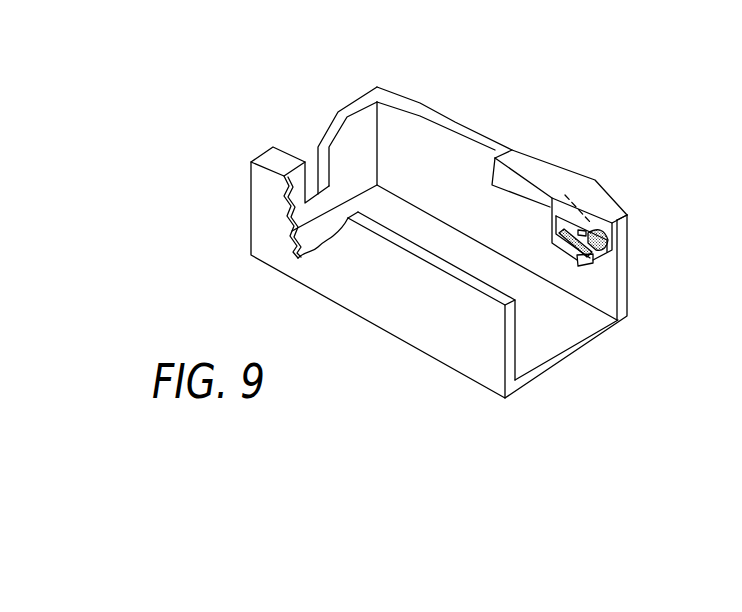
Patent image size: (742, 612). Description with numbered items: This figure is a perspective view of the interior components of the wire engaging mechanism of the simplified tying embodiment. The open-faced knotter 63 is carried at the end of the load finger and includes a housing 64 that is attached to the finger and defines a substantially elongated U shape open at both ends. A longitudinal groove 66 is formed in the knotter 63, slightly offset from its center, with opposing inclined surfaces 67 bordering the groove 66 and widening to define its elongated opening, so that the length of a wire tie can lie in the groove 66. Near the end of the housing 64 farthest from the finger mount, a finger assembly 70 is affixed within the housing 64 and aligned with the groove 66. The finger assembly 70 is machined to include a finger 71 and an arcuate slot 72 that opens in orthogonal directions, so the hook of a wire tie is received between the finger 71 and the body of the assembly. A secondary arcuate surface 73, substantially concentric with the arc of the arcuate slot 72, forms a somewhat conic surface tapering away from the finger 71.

The knotter 63 is at (634, 311).
The housing 64 is at (580, 326).
The longitudinal groove 66 is at (312, 182).
The inclined surfaces 67 is at (338, 120).
The finger assembly 70 is at (541, 178).
The finger 71 is at (582, 266).
The arcuate slot 72 is at (552, 246).
The secondary arcuate surface 73 is at (606, 238).